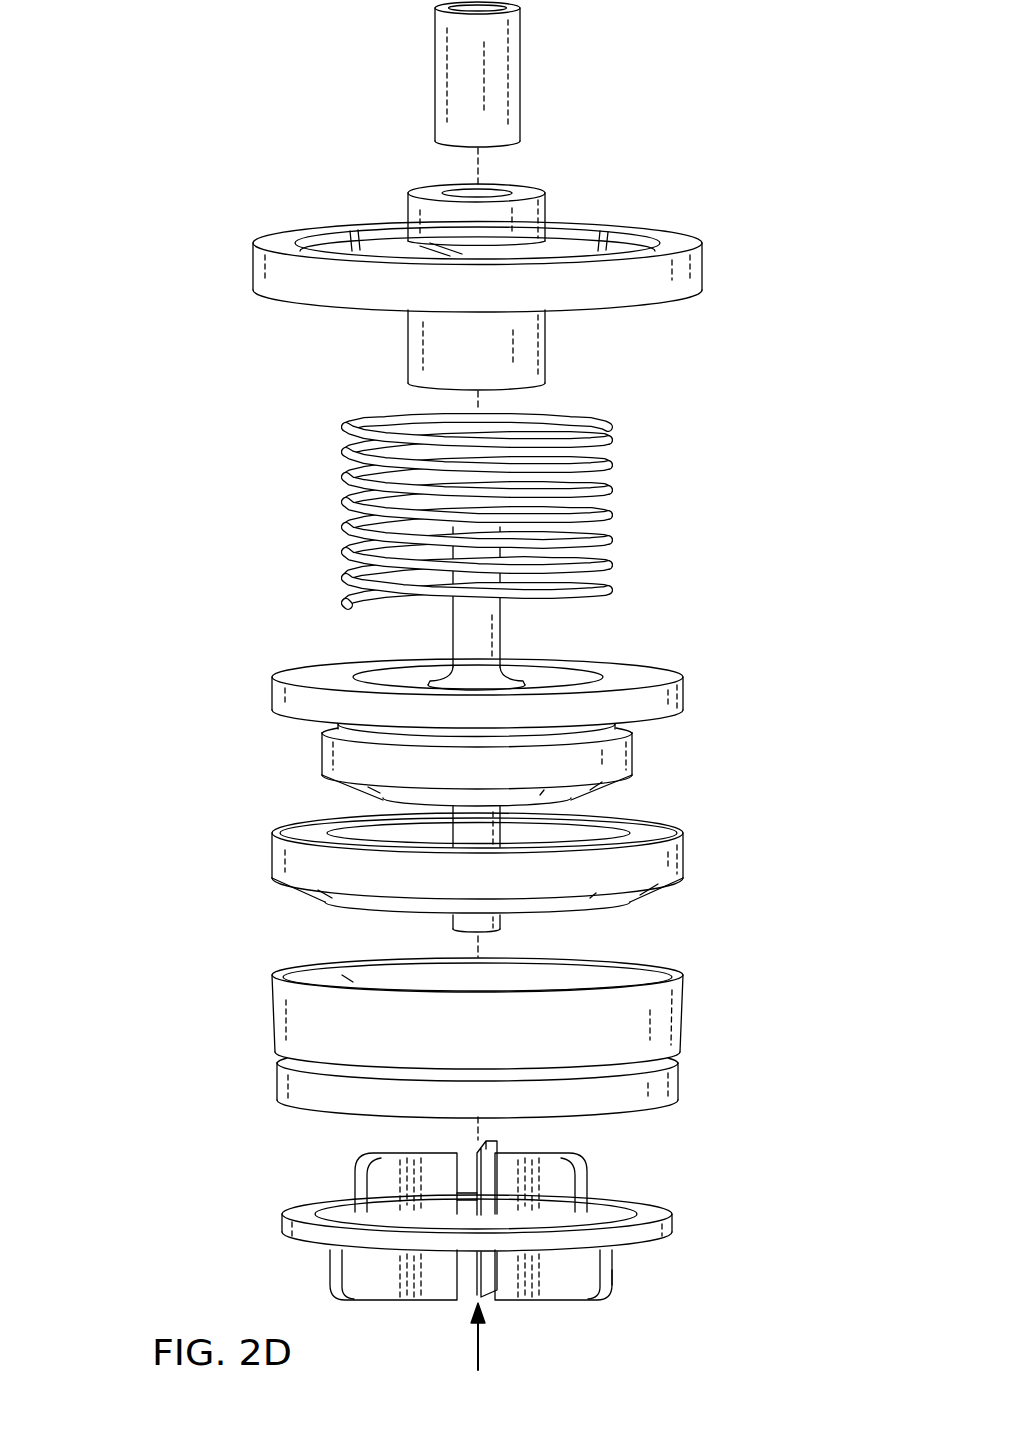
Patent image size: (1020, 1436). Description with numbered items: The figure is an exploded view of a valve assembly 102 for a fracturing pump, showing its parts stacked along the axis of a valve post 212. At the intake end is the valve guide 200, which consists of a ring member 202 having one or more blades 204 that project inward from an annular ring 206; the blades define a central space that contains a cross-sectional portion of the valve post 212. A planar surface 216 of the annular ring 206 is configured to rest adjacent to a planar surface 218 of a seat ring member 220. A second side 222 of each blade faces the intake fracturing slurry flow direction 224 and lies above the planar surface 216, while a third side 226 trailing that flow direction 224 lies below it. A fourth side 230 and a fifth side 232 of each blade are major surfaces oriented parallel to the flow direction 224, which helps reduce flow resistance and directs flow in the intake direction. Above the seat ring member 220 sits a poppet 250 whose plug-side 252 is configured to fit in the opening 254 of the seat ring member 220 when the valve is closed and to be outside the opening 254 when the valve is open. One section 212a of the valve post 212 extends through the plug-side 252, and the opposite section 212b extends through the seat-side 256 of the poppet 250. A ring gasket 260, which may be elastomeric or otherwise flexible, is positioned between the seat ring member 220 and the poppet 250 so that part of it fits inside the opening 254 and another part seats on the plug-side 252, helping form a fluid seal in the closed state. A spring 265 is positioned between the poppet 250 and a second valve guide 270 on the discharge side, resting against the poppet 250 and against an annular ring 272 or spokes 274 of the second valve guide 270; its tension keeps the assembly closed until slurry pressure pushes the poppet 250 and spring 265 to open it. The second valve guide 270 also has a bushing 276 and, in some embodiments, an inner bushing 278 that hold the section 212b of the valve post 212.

The valve assembly 102 is at (211, 62).
The valve guide 200 is at (184, 1257).
The ring member 202 is at (292, 1268).
The blades 204 is at (624, 1283).
The annular ring 206 is at (282, 1225).
The valve post 212 is at (502, 923).
The section of the valve post 212a is at (503, 840).
The opposite section of the valve post 212b is at (501, 630).
The planar surface 216 is at (305, 1208).
The planar surface 218 is at (342, 1110).
The seat ring member 220 is at (272, 1010).
The second side 222 is at (365, 1303).
The intake fracturing slurry flow direction 224 is at (483, 1348).
The third side 226 is at (553, 1182).
The fourth side 230 is at (560, 1290).
The fifth side 232 is at (432, 1287).
The poppet 250 is at (696, 692).
The plug-side 252 is at (311, 725).
The opening 254 is at (320, 977).
The seat-side 256 is at (261, 651).
The ring gasket 260 is at (272, 857).
The spring 265 is at (342, 505).
The second valve guide 270 is at (212, 291).
The annular ring 272 is at (253, 272).
The spokes 274 is at (372, 245).
The bushing 276 is at (405, 352).
The inner bushing 278 is at (435, 77).